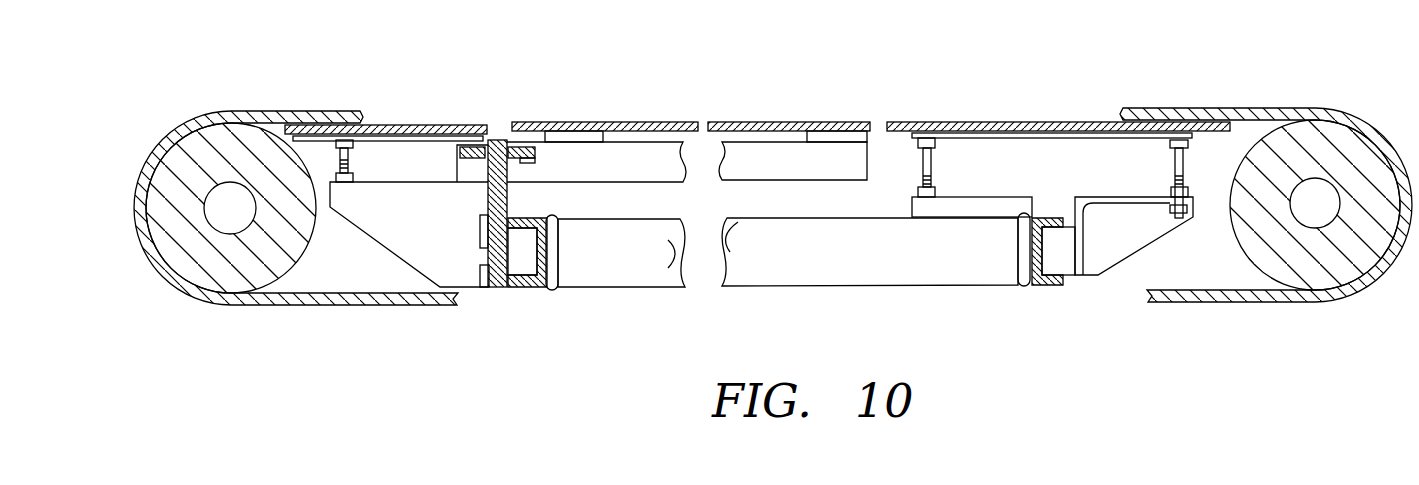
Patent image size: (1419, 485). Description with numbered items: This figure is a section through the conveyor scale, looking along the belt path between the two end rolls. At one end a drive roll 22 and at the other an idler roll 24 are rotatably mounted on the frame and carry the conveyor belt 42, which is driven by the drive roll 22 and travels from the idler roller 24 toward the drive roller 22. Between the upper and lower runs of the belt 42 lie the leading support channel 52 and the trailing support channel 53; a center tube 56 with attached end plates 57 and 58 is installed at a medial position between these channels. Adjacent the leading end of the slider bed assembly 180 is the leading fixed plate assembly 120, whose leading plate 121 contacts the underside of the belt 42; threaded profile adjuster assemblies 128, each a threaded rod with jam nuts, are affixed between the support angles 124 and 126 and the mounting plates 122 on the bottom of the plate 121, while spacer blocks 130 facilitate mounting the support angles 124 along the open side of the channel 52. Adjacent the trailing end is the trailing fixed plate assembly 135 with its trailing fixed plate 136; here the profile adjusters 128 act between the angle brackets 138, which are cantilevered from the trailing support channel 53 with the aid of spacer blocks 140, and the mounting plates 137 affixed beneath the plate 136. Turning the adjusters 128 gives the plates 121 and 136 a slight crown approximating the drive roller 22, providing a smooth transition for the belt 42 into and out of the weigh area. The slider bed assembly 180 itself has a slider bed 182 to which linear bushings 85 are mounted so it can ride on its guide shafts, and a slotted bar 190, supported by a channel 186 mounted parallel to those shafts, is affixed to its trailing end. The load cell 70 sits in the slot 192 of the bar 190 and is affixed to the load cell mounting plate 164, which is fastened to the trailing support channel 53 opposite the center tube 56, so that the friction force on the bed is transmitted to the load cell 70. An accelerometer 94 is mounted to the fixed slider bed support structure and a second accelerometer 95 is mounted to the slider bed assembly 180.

The drive roll 22 is at (220, 252).
The idler roll 24 is at (1338, 252).
The conveyor belt 42 is at (236, 112).
The leading support channel 52 is at (1043, 288).
The trailing support channel 53 is at (528, 220).
The center tube 56 is at (783, 267).
The end plate 57 is at (1023, 290).
The end plate 58 is at (553, 288).
The load cell 70 is at (515, 147).
The linear bushing 85 is at (596, 140).
The accelerometer 94 is at (482, 232).
The accelerometer 95 is at (538, 160).
The leading fixed plate assembly 120 is at (1059, 93).
The leading plate 121 is at (1033, 127).
The mounting plate 122 is at (1088, 133).
The support angle 124 is at (1125, 230).
The support angle 126 is at (972, 207).
The profile adjuster assembly 128 is at (468, 142).
The spacer block 130 is at (1050, 258).
The trailing fixed plate assembly 135 is at (483, 113).
The trailing fixed plate 136 is at (471, 140).
The mounting plate 137 is at (387, 141).
The support angle 138 is at (440, 268).
The spacer block 140 is at (525, 260).
The load cell mounting plate 164 is at (486, 288).
The slider bed assembly 180 is at (691, 96).
The slider bed 182 is at (838, 120).
The channel 186 is at (768, 165).
The slotted bar 190 is at (538, 158).
The slot 192 is at (488, 140).